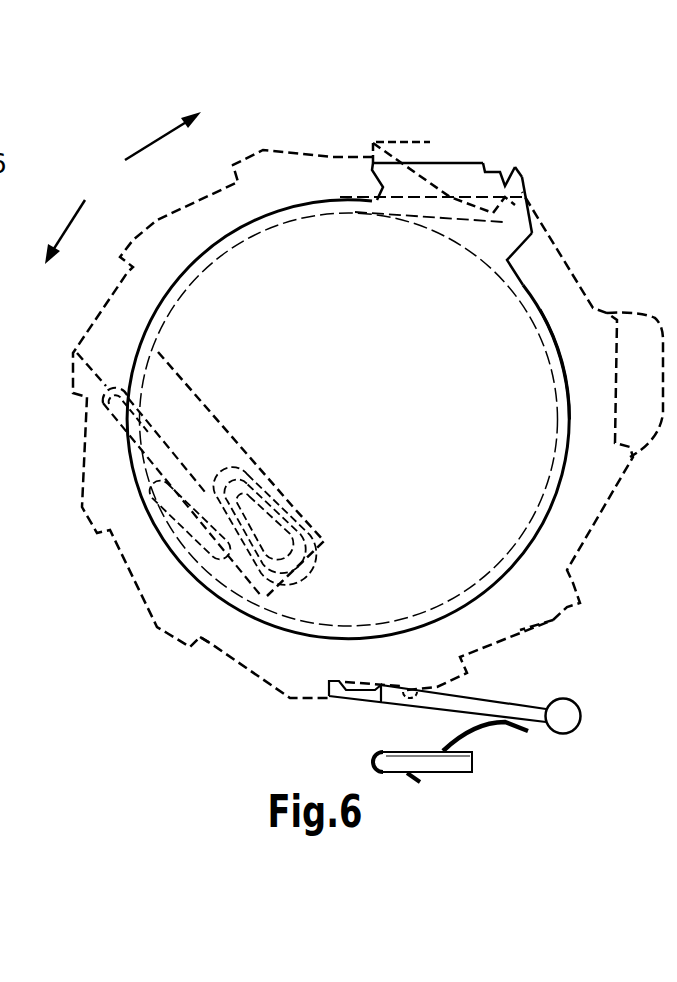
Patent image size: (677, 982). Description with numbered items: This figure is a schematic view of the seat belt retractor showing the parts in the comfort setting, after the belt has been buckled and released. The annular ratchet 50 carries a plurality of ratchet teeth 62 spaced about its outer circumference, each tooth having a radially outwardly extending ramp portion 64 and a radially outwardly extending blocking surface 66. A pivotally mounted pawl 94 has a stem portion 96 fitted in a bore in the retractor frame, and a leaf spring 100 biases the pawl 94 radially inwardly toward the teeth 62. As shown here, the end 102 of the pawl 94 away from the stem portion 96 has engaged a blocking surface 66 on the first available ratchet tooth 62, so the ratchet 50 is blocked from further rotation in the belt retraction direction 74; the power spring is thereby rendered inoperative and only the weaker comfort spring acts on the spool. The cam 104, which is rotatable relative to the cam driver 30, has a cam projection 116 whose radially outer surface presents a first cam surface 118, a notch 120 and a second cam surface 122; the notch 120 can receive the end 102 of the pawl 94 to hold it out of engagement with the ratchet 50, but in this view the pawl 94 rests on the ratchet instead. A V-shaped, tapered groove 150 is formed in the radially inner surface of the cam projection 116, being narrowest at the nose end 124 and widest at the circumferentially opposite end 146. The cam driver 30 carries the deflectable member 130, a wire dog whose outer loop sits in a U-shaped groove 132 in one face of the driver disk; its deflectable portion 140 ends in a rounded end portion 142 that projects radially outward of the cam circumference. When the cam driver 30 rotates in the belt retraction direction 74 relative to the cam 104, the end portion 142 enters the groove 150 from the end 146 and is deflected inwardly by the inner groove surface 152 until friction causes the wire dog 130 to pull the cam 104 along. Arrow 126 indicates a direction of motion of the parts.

The cam driver 30 is at (297, 289).
The ratchet 50 is at (573, 607).
The ratchet teeth 62 is at (642, 385).
The ramp portion 64 is at (415, 690).
The blocking surface 66 is at (200, 645).
The belt retraction direction 74 is at (68, 222).
The pawl 94 is at (450, 706).
The stem portion 96 is at (573, 718).
The leaf spring 100 is at (493, 736).
The end of the pawl 102 is at (340, 693).
The cam 104 is at (554, 321).
The cam projection 116 is at (530, 168).
The first cam surface 118 is at (525, 188).
The notch 120 is at (503, 180).
The second cam surface 122 is at (403, 160).
The nose end 124 is at (380, 192).
The direction arrow 126 is at (152, 138).
The deflectable member 130 is at (225, 540).
The U-shaped groove 132 is at (300, 512).
The deflectable portion 140 is at (157, 467).
The rounded end portion 142 is at (72, 355).
The end of the cam projection 146 is at (528, 244).
The groove 150 is at (527, 205).
The inner groove surface 152 is at (497, 207).